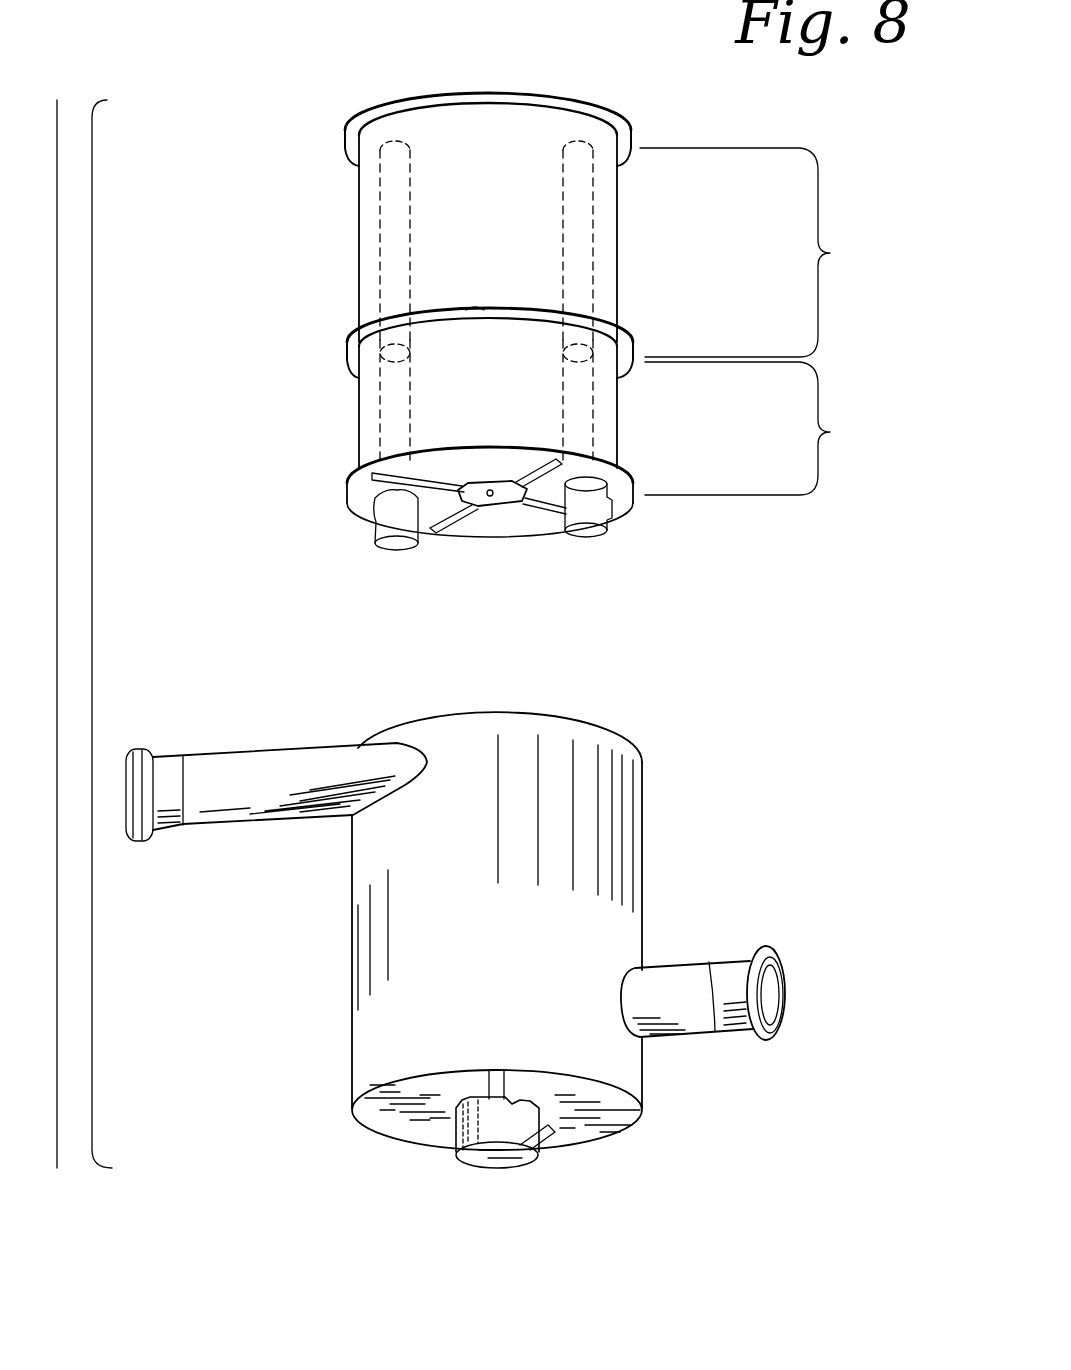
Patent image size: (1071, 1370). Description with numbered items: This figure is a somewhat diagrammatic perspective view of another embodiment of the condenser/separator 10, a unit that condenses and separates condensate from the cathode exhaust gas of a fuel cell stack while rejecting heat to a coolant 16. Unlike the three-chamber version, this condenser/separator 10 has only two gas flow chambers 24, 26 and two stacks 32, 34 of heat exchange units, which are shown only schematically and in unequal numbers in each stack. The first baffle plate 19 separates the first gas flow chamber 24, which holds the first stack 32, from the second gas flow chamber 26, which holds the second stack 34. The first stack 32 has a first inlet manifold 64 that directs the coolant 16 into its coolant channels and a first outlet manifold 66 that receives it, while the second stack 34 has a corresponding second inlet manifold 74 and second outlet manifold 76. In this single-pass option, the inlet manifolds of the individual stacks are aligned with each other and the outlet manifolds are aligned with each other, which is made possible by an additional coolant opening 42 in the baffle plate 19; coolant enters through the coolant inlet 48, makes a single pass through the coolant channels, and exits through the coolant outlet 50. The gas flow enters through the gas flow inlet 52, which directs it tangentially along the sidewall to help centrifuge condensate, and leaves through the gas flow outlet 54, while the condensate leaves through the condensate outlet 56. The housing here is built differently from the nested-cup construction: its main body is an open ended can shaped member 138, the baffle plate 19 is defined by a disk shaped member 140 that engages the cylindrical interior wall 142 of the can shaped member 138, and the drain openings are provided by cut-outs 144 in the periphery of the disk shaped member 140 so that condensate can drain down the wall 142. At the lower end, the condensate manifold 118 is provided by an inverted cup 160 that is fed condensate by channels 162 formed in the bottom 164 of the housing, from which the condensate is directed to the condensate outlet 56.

The condenser/separator 10 is at (755, 647).
The coolant 16 is at (353, 745).
The first baffle plate 19 is at (362, 334).
The first gas flow chamber 24 is at (346, 215).
The second gas flow chamber 26 is at (342, 453).
The first stack 32 is at (756, 252).
The second stack 34 is at (758, 428).
The coolant opening 42 is at (355, 330).
The coolant inlet 48 is at (578, 530).
The coolant outlet 50 is at (395, 545).
The gas flow inlet 52 is at (222, 803).
The gas flow outlet 54 is at (745, 965).
The condensate outlet 56 is at (545, 1150).
The first inlet manifold 64 is at (596, 168).
The first outlet manifold 66 is at (360, 163).
The second inlet manifold 74 is at (596, 402).
The second outlet manifold 76 is at (382, 427).
The condensate manifold 118 is at (455, 1150).
The can shaped member 138 is at (648, 808).
The disk shaped member 140 is at (515, 307).
The cylindrical interior wall 142 is at (390, 1130).
The cut-outs 144 is at (474, 312).
The inverted cup 160 is at (493, 1135).
The channels 162 is at (544, 480).
The bottom 164 is at (367, 505).